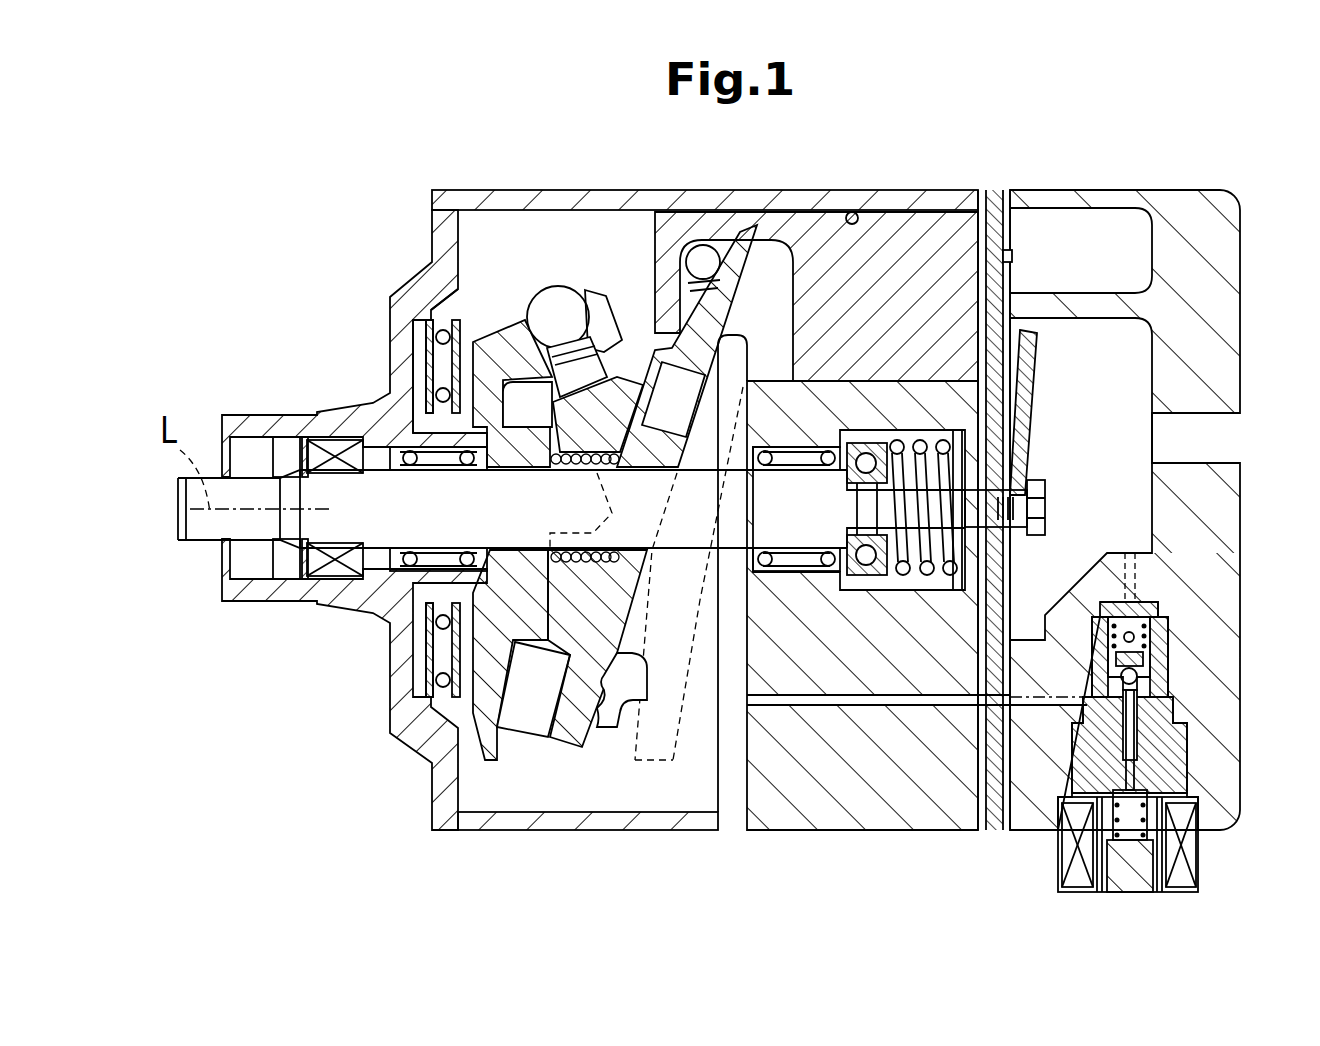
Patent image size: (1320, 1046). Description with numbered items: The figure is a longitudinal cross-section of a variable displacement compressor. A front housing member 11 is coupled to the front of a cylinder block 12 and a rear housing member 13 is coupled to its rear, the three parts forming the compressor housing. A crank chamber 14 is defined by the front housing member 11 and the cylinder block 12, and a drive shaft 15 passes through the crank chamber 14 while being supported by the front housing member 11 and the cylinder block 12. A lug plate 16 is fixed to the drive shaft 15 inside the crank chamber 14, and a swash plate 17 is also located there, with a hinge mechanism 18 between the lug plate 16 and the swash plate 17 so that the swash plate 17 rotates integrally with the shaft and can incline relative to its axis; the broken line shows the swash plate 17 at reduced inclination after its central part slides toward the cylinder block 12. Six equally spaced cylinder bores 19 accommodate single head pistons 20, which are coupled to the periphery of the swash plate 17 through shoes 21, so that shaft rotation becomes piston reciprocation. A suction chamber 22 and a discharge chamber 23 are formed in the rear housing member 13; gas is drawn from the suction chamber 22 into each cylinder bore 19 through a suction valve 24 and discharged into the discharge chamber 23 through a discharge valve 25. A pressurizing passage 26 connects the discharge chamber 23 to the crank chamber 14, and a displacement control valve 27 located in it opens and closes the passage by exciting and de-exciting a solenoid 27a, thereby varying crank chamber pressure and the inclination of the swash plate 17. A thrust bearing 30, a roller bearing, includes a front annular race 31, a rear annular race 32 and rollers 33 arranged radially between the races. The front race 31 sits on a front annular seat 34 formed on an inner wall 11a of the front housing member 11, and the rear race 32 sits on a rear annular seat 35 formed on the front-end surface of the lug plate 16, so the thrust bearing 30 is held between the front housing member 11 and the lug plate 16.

The front housing member 11 is at (432, 830).
The inner wall 11a is at (448, 298).
The cylinder block 12 is at (830, 832).
The rear housing member 13 is at (1241, 698).
The crank chamber 14 is at (613, 800).
The drive shaft 15 is at (197, 548).
The lug plate 16 is at (485, 760).
The swash plate 17 is at (623, 713).
The hinge mechanism 18 is at (540, 287).
The cylinder bore 19 is at (855, 212).
The single head piston 20 is at (812, 212).
The shoe 21 is at (723, 240).
The suction chamber 22 is at (1135, 267).
The discharge chamber 23 is at (1105, 452).
The suction valve 24 is at (1012, 257).
The discharge valve 25 is at (1020, 343).
The pressurizing passage 26 is at (757, 700).
The displacement control valve 27 is at (1060, 890).
The solenoid 27a is at (1196, 840).
The thrust bearing 30 is at (418, 340).
The front annular race 31 is at (427, 645).
The rear annular race 32 is at (502, 675).
The rollers 33 is at (447, 357).
The front annular seat 34 is at (418, 337).
The rear annular seat 35 is at (525, 430).